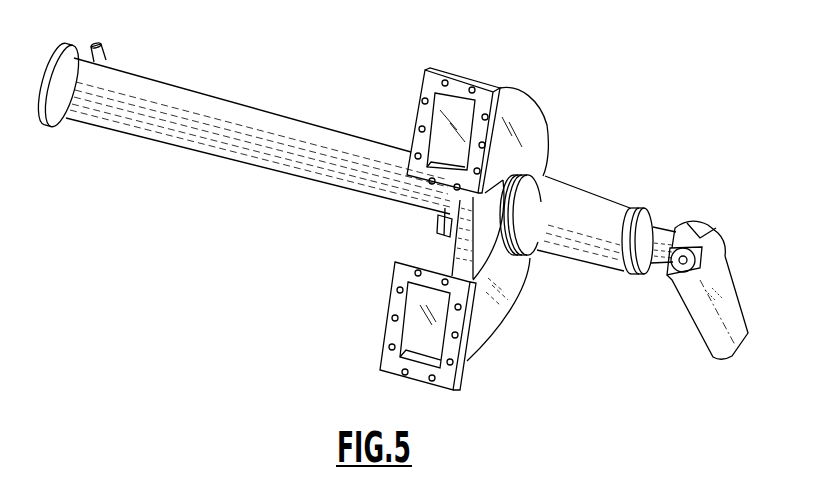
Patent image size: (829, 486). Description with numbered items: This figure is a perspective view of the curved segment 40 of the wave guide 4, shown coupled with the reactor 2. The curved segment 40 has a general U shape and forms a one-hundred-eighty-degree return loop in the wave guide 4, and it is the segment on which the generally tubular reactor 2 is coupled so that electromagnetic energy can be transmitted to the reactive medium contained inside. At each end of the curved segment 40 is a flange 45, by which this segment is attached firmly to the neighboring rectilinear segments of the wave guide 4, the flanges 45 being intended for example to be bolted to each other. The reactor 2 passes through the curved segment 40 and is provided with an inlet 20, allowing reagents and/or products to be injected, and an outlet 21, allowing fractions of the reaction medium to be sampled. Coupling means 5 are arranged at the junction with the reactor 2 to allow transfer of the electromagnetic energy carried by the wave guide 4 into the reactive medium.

The reactor 2 is at (202, 88).
The outlet 21 is at (105, 51).
The wave guide 4 is at (502, 339).
The coupling means 5 is at (567, 176).
The inlet 20 is at (430, 224).
The curved segment 40 is at (528, 103).
The flange 45 is at (430, 83).